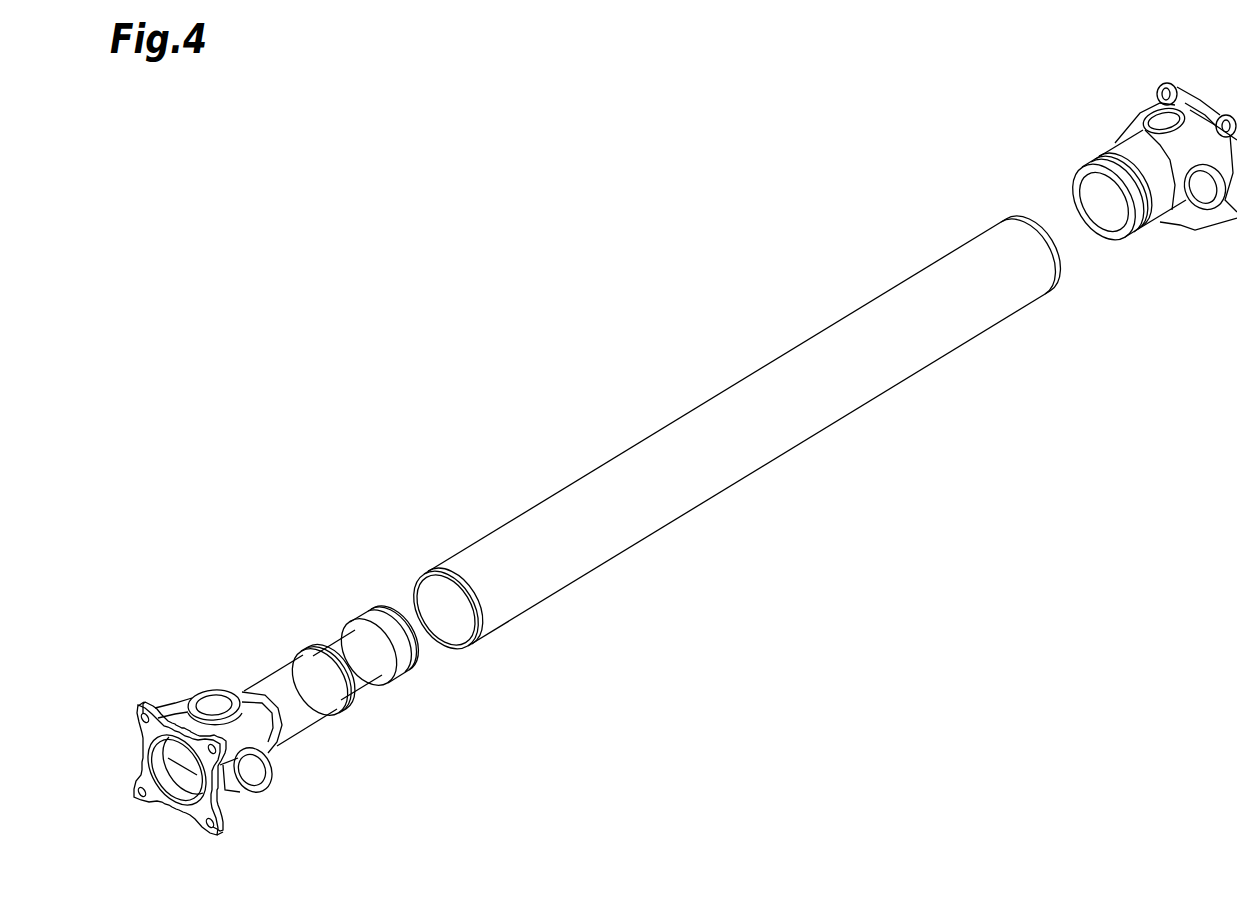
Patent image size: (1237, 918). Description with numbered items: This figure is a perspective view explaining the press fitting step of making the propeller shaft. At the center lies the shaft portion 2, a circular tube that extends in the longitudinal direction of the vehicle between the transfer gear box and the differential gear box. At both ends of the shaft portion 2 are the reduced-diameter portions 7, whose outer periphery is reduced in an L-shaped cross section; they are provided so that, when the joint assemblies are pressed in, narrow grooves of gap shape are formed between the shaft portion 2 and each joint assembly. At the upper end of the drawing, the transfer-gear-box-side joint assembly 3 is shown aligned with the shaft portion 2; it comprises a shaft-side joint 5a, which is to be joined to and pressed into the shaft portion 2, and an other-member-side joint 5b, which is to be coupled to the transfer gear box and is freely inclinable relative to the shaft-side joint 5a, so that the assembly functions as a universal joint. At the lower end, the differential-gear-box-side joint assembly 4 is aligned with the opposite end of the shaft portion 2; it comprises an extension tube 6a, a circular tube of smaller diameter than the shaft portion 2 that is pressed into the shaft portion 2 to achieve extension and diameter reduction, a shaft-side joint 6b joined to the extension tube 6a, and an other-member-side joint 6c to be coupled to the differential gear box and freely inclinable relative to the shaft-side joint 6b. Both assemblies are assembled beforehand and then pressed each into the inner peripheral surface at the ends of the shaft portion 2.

The shaft portion 2 is at (728, 386).
The transfer-gear-box-side joint assembly 3 is at (1107, 55).
The differential-gear-box-side joint assembly 4 is at (300, 553).
The shaft-side joint 5a is at (1110, 147).
The other-member-side joint 5b is at (1167, 72).
The extension tube 6a is at (336, 647).
The shaft-side joint 6b is at (247, 697).
The other-member-side joint 6c is at (156, 700).
The reduced-diameter portions 7 is at (433, 571).